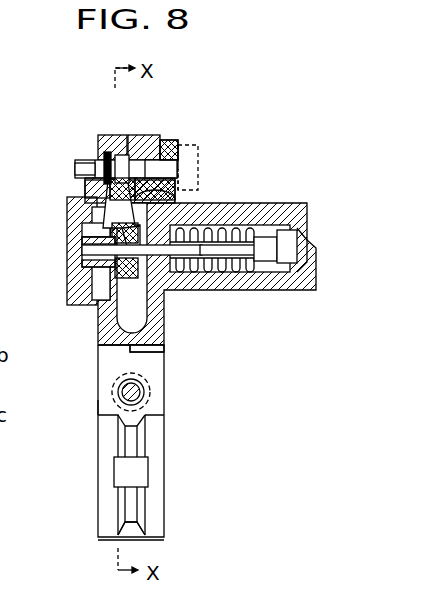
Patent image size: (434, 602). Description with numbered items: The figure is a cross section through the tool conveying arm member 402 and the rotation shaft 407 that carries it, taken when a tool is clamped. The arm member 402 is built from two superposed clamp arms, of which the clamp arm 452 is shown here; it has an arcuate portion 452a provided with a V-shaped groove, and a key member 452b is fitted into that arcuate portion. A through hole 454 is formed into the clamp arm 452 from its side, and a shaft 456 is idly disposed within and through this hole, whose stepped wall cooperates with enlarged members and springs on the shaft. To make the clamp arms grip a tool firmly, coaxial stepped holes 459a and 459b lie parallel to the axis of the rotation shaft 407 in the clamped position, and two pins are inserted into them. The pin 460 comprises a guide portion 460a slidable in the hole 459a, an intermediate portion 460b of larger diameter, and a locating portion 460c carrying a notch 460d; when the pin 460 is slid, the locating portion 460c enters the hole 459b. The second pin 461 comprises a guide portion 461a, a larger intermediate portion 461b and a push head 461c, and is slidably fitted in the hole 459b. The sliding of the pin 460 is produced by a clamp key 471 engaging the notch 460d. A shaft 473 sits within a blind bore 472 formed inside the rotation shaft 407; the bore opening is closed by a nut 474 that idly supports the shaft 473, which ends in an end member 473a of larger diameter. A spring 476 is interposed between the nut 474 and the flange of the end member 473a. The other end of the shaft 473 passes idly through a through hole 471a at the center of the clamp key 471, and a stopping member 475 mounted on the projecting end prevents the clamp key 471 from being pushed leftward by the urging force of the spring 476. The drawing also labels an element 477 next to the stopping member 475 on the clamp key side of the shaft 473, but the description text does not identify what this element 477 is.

The tool conveying arm member 402 is at (165, 434).
The rotation shaft 407 is at (272, 207).
The clamp arm 452 is at (165, 498).
The arcuate portion 452a is at (156, 526).
The key member 452b is at (140, 471).
The through hole 454 is at (150, 373).
The shaft 456 is at (133, 394).
The stepped hole 459a is at (100, 157).
The stepped hole 459b is at (173, 138).
The pin 460 is at (78, 170).
The guide portion 460a is at (80, 160).
The intermediate portion 460b is at (110, 150).
The locating portion 460c is at (121, 160).
The notch 460d is at (90, 188).
The pin 461 is at (190, 172).
The guide portion 461a is at (185, 160).
The intermediate portion 461b is at (178, 143).
The push head 461c is at (178, 190).
The clamp key 471 is at (120, 313).
The through hole 471a is at (83, 228).
The blind bore 472 is at (286, 227).
The shaft 473 is at (214, 282).
The end member 473a is at (275, 282).
The nut 474 is at (166, 282).
The stopping member 475 is at (80, 266).
The spring 476 is at (243, 282).
The push rod 477 is at (80, 246).